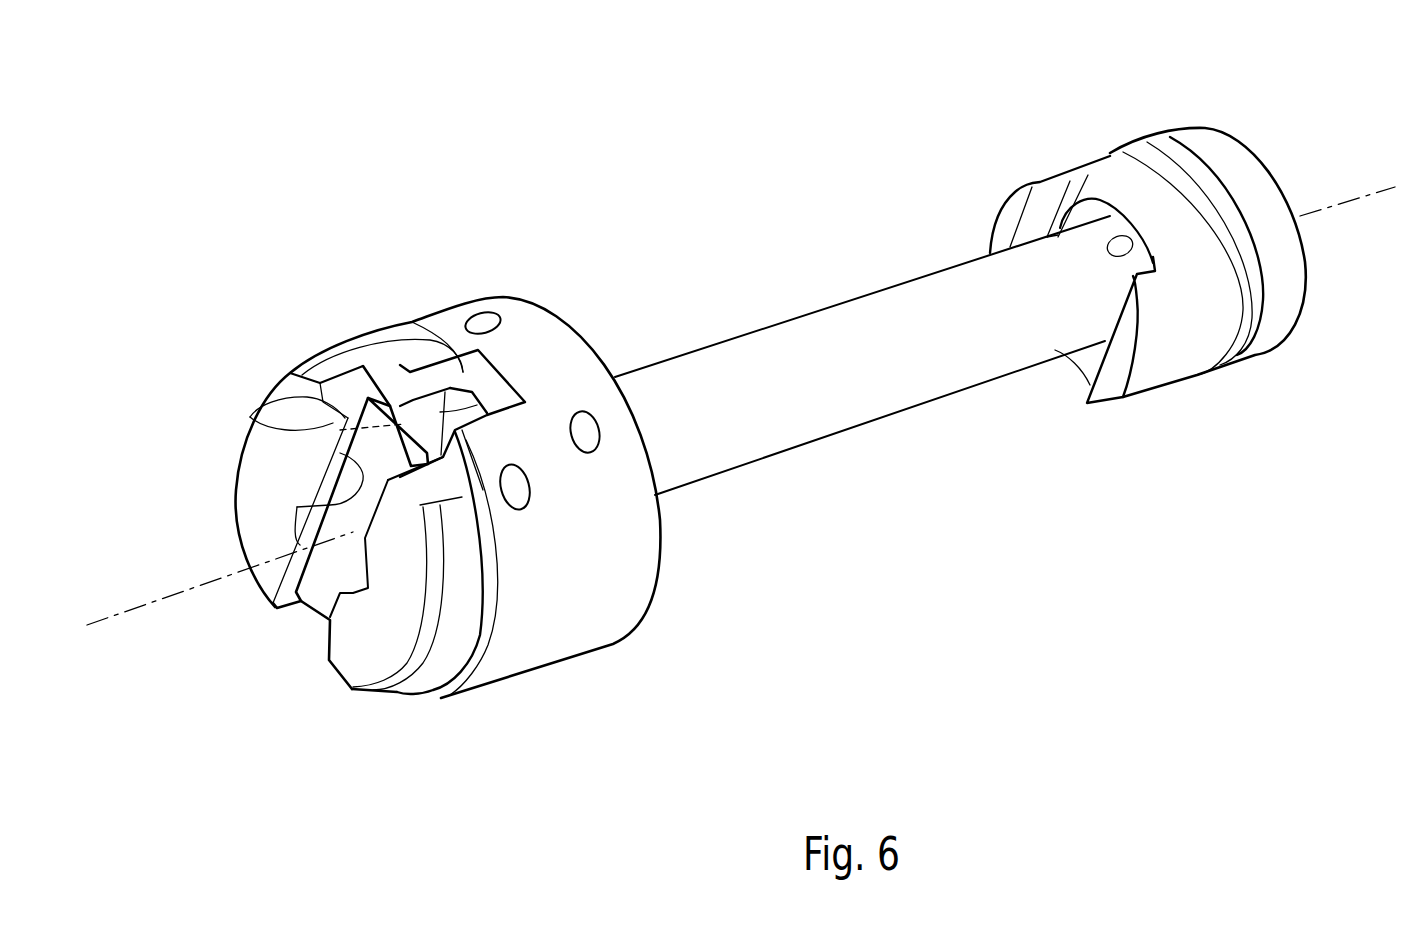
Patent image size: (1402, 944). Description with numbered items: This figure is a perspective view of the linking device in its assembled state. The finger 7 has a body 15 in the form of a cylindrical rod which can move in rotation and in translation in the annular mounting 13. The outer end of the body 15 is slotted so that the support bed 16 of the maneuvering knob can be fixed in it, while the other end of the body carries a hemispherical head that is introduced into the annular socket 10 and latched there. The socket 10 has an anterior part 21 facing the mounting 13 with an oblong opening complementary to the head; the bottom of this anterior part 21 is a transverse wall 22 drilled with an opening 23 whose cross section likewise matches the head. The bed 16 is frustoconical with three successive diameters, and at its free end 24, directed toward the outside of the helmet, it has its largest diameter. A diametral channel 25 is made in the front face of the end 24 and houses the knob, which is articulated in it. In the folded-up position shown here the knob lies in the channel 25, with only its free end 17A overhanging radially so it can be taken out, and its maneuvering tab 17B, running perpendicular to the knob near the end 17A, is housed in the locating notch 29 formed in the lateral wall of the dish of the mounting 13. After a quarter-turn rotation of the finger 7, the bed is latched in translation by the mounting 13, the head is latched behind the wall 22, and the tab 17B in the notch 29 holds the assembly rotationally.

The finger 7 is at (820, 290).
The socket 10 is at (1173, 380).
The mounting 13 is at (562, 625).
The body 15 is at (830, 420).
The support bed 16 is at (353, 647).
The free end 17A is at (250, 417).
The maneuvering tab 17B is at (512, 383).
The anterior part 21 is at (1008, 218).
The transverse wall 22 is at (1090, 193).
The opening 23 is at (1138, 256).
The free end 24 is at (455, 630).
The diametral channel 25 is at (297, 505).
The locating notch 29 is at (447, 372).